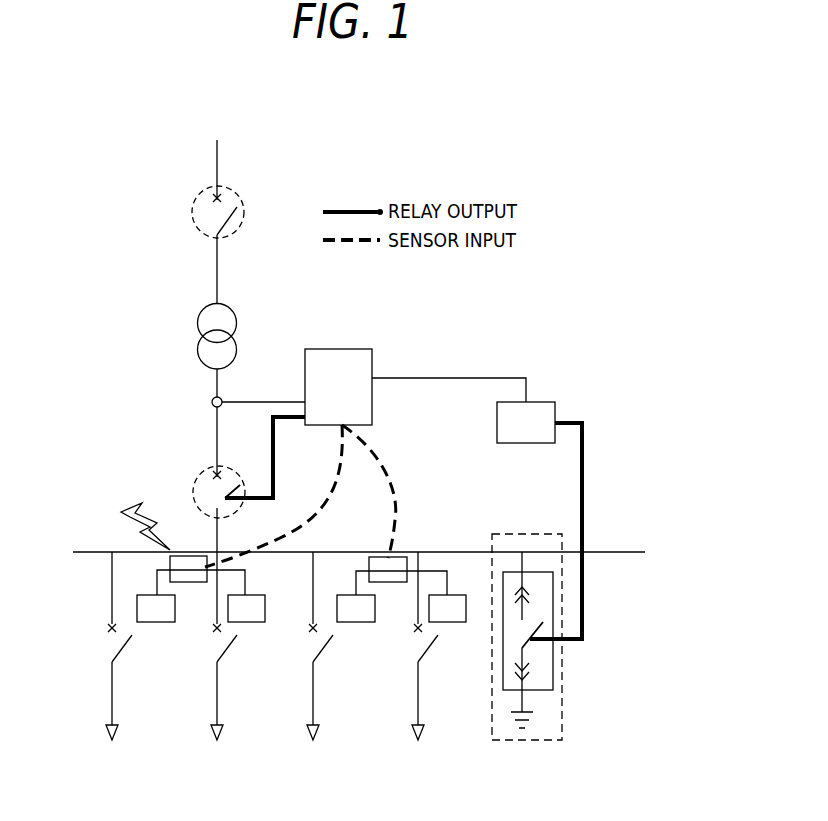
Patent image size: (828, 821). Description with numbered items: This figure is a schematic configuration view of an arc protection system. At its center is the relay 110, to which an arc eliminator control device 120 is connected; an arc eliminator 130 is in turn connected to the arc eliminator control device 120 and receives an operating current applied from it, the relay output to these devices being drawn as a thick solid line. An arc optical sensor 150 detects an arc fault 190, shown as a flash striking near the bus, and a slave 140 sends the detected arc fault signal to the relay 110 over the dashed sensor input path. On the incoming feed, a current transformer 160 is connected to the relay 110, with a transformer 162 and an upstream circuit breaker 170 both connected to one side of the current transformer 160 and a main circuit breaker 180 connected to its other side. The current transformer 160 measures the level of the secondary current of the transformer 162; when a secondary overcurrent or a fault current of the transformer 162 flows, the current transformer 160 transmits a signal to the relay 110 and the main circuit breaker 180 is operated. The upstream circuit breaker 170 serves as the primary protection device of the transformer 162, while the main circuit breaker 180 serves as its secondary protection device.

The relay 110 is at (338, 349).
The arc eliminator control device 120 is at (546, 402).
The arc eliminator 130 is at (553, 673).
The slave 140 is at (387, 582).
The arc optical sensor 150 is at (355, 622).
The current transformer 160 is at (212, 402).
The transformer 162 is at (200, 315).
The upstream circuit breaker 170 is at (193, 207).
The main circuit breaker 180 is at (195, 483).
The arc fault 190 is at (121, 512).